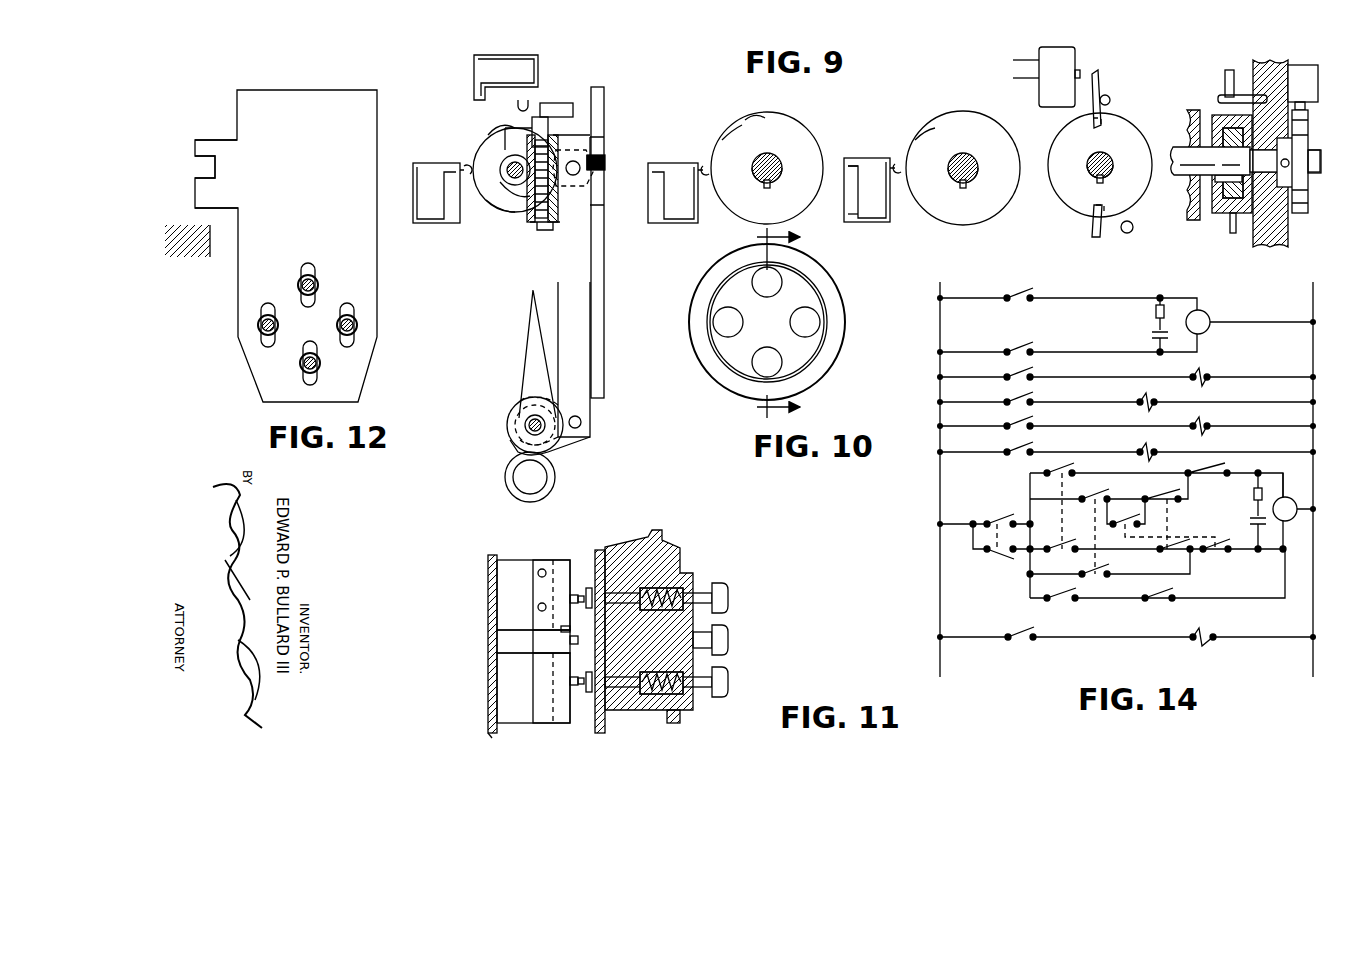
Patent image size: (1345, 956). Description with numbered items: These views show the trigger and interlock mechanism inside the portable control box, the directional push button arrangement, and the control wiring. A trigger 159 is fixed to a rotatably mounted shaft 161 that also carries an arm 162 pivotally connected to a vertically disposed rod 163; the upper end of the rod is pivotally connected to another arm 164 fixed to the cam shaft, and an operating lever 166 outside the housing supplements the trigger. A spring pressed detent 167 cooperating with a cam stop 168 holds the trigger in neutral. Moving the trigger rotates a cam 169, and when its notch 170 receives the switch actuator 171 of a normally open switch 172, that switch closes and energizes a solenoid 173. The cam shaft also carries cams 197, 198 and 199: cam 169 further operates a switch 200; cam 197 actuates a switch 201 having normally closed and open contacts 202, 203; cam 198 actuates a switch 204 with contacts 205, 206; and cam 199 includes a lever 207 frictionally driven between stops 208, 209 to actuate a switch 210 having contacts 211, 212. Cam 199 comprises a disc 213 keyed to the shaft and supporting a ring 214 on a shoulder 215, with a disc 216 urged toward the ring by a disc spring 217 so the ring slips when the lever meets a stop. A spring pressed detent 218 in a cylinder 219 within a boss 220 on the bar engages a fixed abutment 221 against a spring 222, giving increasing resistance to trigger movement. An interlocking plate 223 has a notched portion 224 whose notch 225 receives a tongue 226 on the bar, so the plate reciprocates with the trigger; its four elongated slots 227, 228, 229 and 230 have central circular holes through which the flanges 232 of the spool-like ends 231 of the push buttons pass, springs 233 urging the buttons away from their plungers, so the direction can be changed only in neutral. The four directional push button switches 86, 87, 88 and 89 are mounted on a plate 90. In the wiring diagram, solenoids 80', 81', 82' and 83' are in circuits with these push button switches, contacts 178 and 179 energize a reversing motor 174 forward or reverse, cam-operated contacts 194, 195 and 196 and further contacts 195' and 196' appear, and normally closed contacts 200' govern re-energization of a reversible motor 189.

In FIG. 9, the trigger 159 is at (556, 472).
In FIG. 9, the rotatably mounted shaft 161 is at (533, 422).
In FIG. 9, the arm 162 is at (508, 430).
In FIG. 9, the rod 163 is at (565, 293).
In FIG. 9, the arm 164 is at (512, 192).
In FIG. 9, the operating lever 166 is at (528, 352).
In FIG. 9, the spring pressed detent 167 is at (1300, 65).
In FIG. 9, the cam stop 168 is at (1303, 215).
In FIG. 9, the cam 169 is at (510, 212).
In FIG. 9, the notch 170 is at (478, 152).
In FIG. 9, the switch actuator 171 is at (520, 106).
In FIG. 9, the feed switch 172 is at (493, 60).
In FIG. 14, the feed switch 172 is at (1015, 633).
In FIG. 14, the solenoid 173 is at (1198, 632).
In FIG. 14, the reversing electric motor 174 is at (1205, 314).
In FIG. 14, the contact 178 is at (1013, 294).
In FIG. 14, the contact 179 is at (1015, 348).
In FIG. 14, the reversible electric motor 189 is at (1270, 512).
In FIG. 14, the contact 194 is at (1213, 470).
In FIG. 14, the contact 195 is at (1121, 513).
In FIG. 14, the switch contact 195' is at (1178, 532).
In FIG. 14, the contact 196 is at (1160, 511).
In FIG. 14, the switch contact 196' is at (1206, 555).
In FIG. 9, the cam 197 is at (795, 135).
In FIG. 9, the cam 198 is at (970, 120).
In FIG. 9, the cam 199 is at (1116, 125).
In FIG. 14, the cam 199 is at (1180, 278).
In FIG. 9, the switch 200 is at (435, 204).
In FIG. 14, the switch 200 is at (1087, 606).
In FIG. 14, the normally closed contacts 200' is at (1213, 575).
In FIG. 9, the switch 201 is at (666, 220).
In FIG. 9, the normally closed contact 202 is at (606, 160).
In FIG. 14, the normally closed contact 202 is at (1085, 495).
In FIG. 9, the normally open contact 203 is at (606, 168).
In FIG. 14, the normally open contact 203 is at (1095, 577).
In FIG. 9, the switch 204 is at (862, 165).
In FIG. 9, the normally closed contact 205 is at (852, 203).
In FIG. 14, the normally closed contact 205 is at (1062, 470).
In FIG. 9, the normally open contact 206 is at (858, 215).
In FIG. 14, the normally open contact 206 is at (1068, 552).
In FIG. 9, the lever 207 is at (1097, 72).
In FIG. 9, the stop 208 is at (1107, 95).
In FIG. 9, the stop 209 is at (1133, 222).
In FIG. 9, the switch 210 is at (1052, 50).
In FIG. 14, the switch 210 is at (958, 537).
In FIG. 9, the normally closed contact 211 is at (1013, 59).
In FIG. 14, the normally closed contact 211 is at (980, 512).
In FIG. 9, the normally open contact 212 is at (1013, 75).
In FIG. 14, the normally open contact 212 is at (988, 556).
In FIG. 9, the disc 213 is at (1245, 222).
In FIG. 9, the ring 214 is at (1215, 118).
In FIG. 9, the shoulder 215 is at (1246, 161).
In FIG. 9, the disc 216 is at (1228, 225).
In FIG. 9, the disc spring 217 is at (1198, 220).
In FIG. 9, the spring pressed detent 218 is at (505, 128).
In FIG. 9, the cylinder 219 is at (540, 222).
In FIG. 9, the boss 220 is at (548, 128).
In FIG. 9, the fixed abutment 221 is at (557, 102).
In FIG. 9, the spring 222 is at (553, 232).
In FIG. 12, the interlocking plate 223 is at (335, 207).
In FIG. 9, the interlocking plate 223 is at (598, 290).
In FIG. 11, the interlocking plate 223 is at (597, 552).
In FIG. 12, the notched portion 224 is at (207, 138).
In FIG. 9, the notched portion 224 is at (600, 152).
In FIG. 12, the notch 225 is at (208, 168).
In FIG. 9, the notch 225 is at (603, 157).
In FIG. 9, the tongue 226 is at (598, 175).
In FIG. 12, the elongated slot 227 is at (308, 265).
In FIG. 12, the elongated slot 228 is at (281, 284).
In FIG. 12, the elongated slot 229 is at (310, 378).
In FIG. 12, the elongated slot 230 is at (345, 304).
In FIG. 11, the spool-like end 231 is at (589, 588).
In FIG. 11, the flange 232 is at (580, 600).
In FIG. 11, the spring 233 is at (670, 590).
In FIG. 14, the solenoid 80' is at (1232, 372).
In FIG. 14, the solenoid 81' is at (1211, 396).
In FIG. 14, the solenoid 82' is at (1235, 421).
In FIG. 14, the solenoid 83' is at (1209, 446).
In FIG. 10, the push button switch 86 is at (775, 296).
In FIG. 11, the push button switch 86 is at (724, 593).
In FIG. 14, the push button switch 86 is at (1010, 373).
In FIG. 10, the push button switch 87 is at (775, 352).
In FIG. 11, the push button switch 87 is at (724, 682).
In FIG. 14, the push button switch 87 is at (1010, 398).
In FIG. 10, the push button switch 88 is at (738, 336).
In FIG. 14, the push button switch 88 is at (1010, 422).
In FIG. 10, the push button switch 89 is at (805, 336).
In FIG. 11, the push button switch 89 is at (724, 636).
In FIG. 14, the push button switch 89 is at (1010, 447).
In FIG. 10, the plate 90 is at (828, 292).
In FIG. 11, the plate 90 is at (668, 548).